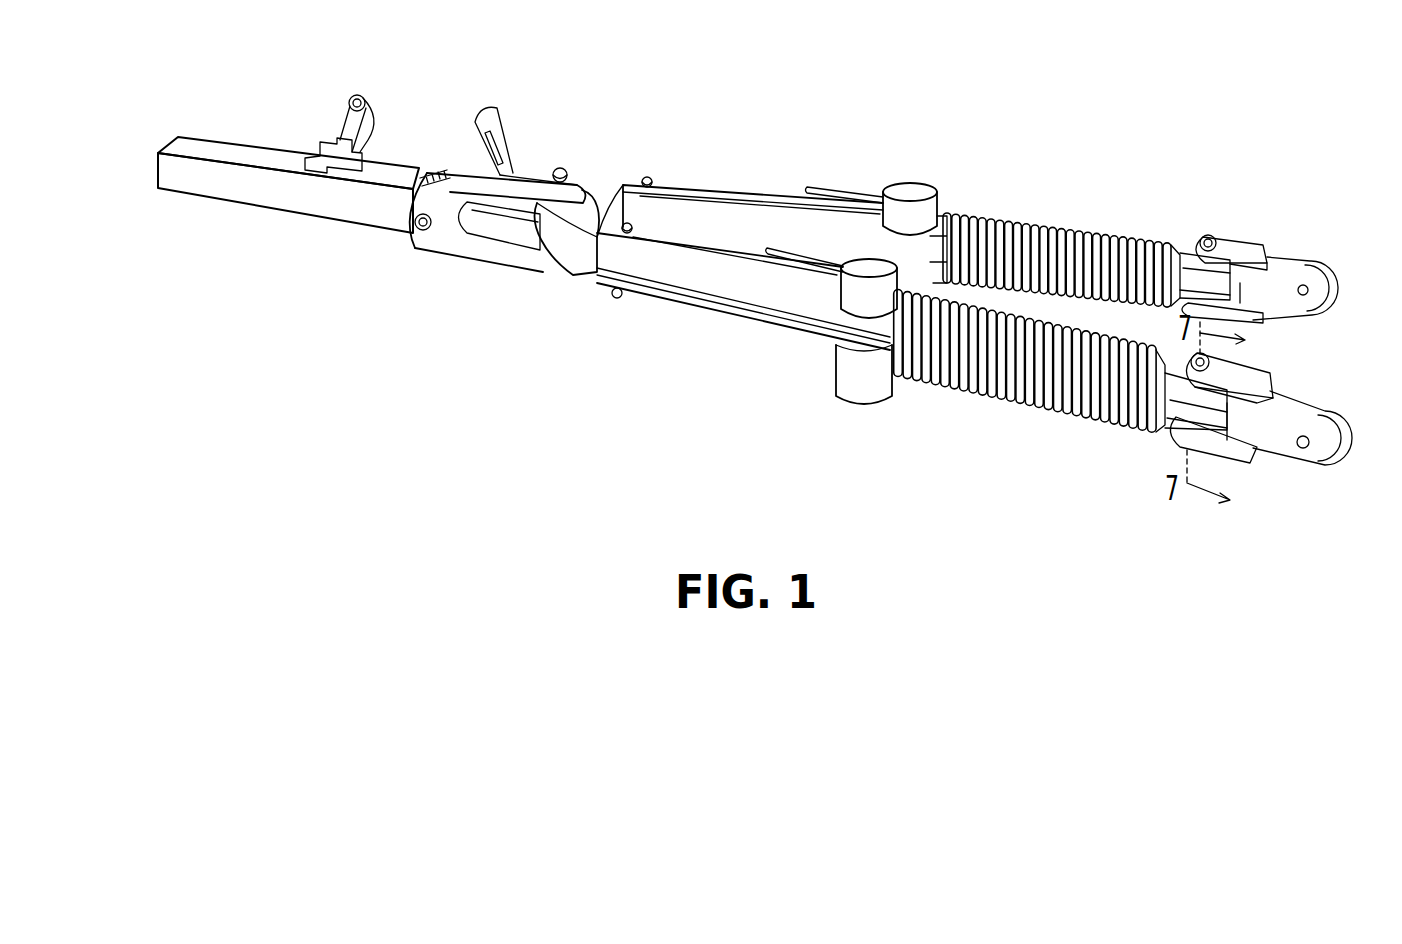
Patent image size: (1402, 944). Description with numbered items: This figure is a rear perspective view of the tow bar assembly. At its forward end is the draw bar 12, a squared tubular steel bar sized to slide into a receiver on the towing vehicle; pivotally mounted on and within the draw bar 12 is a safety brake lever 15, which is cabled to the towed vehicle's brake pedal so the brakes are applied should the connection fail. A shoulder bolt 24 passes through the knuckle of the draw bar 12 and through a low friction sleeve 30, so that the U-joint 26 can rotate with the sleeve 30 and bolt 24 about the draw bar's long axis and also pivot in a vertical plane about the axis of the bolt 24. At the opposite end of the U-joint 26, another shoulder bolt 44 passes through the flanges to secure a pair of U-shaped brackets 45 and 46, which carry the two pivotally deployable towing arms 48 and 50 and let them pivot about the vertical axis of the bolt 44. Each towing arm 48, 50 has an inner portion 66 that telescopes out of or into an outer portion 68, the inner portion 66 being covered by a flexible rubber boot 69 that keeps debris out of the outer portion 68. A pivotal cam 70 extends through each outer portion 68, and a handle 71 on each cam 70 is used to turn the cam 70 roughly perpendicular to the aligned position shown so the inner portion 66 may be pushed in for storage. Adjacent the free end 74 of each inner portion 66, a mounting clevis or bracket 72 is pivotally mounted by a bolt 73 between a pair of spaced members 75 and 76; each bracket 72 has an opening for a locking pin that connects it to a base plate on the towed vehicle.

The draw bar 12 is at (313, 212).
The safety brake lever 15 is at (337, 122).
The shoulder bolt 24 is at (413, 233).
The U-joint 26 is at (512, 283).
The low friction sleeve 30 is at (427, 180).
The shoulder bolt 44 is at (567, 172).
The U-shaped bracket 45 is at (568, 270).
The U-shaped bracket 46 is at (627, 183).
The towing arm 48 is at (748, 340).
The towing arm 50 is at (802, 150).
The inner portion 66 is at (1037, 323).
The outer portion 68 is at (723, 190).
The flexible rubber boot 69 is at (1031, 214).
The pivotal cam 70 is at (907, 192).
The handle 71 is at (830, 186).
The mounting clevis or bracket 72 is at (1282, 245).
The bolt 73 is at (1203, 238).
The free end 74 is at (1165, 425).
The spaced member 75 is at (1233, 243).
The spaced member 76 is at (1270, 320).